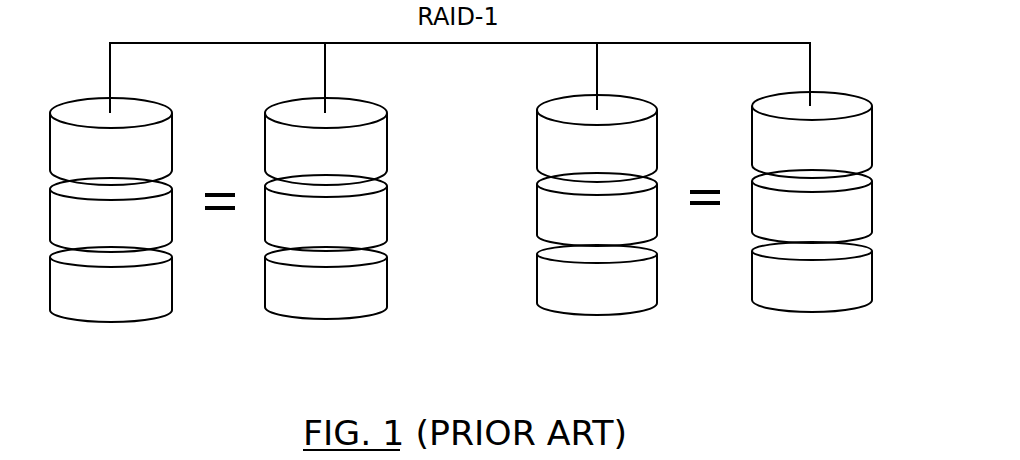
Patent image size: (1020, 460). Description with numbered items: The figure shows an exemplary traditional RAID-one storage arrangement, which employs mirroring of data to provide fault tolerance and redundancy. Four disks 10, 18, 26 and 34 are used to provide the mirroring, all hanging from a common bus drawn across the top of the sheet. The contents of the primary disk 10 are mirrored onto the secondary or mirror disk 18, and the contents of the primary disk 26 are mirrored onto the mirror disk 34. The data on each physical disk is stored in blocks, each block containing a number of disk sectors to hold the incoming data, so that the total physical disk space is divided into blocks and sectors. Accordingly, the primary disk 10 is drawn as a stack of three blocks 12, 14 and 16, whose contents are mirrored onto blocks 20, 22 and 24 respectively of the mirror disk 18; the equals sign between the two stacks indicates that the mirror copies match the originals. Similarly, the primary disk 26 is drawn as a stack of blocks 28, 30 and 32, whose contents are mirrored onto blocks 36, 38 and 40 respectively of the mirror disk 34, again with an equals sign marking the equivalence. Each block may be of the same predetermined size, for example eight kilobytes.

The primary disk 10 is at (139, 236).
The block 12 is at (173, 138).
The block 14 is at (173, 220).
The block 16 is at (173, 293).
The secondary or mirror disk 18 is at (354, 235).
The block 20 is at (387, 140).
The block 22 is at (387, 210).
The block 24 is at (387, 275).
The primary disk 26 is at (568, 232).
The block 28 is at (537, 137).
The block 30 is at (537, 208).
The block 32 is at (537, 277).
The mirror disk 34 is at (786, 236).
The block 36 is at (752, 133).
The block 38 is at (752, 215).
The block 40 is at (752, 287).